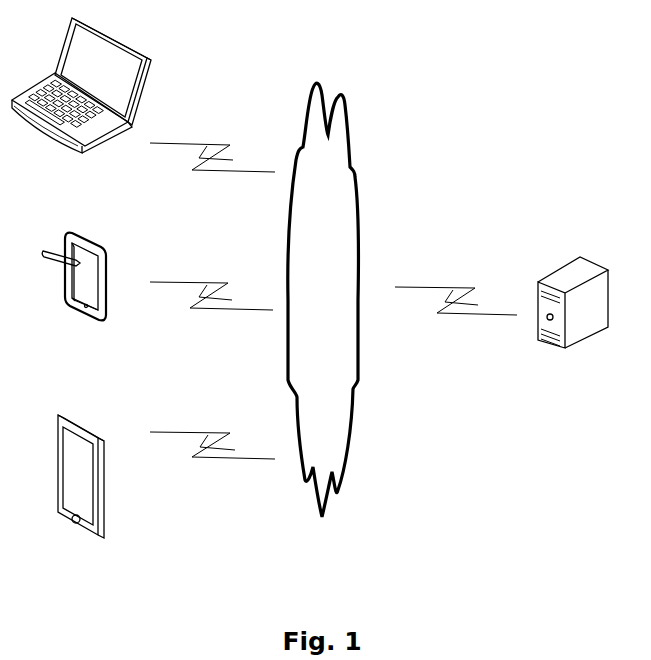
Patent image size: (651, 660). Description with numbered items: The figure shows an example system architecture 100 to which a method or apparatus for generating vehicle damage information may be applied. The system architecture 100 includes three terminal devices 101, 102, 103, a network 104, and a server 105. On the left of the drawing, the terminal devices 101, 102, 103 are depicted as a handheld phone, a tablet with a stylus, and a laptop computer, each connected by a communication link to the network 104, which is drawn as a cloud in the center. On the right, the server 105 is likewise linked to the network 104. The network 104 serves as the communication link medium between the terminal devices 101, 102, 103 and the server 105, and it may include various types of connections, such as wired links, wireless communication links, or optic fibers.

The system architecture 100 is at (559, 68).
The terminal device 101 is at (81, 496).
The terminal device 102 is at (74, 296).
The terminal device 103 is at (81, 104).
The network 104 is at (323, 300).
The server 105 is at (573, 326).